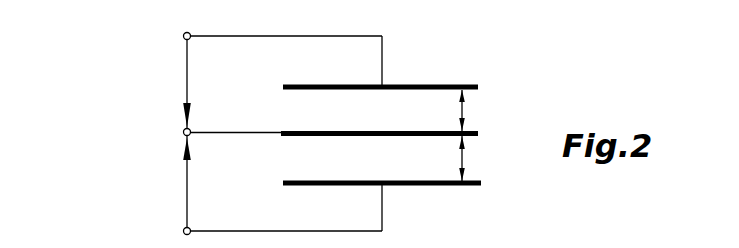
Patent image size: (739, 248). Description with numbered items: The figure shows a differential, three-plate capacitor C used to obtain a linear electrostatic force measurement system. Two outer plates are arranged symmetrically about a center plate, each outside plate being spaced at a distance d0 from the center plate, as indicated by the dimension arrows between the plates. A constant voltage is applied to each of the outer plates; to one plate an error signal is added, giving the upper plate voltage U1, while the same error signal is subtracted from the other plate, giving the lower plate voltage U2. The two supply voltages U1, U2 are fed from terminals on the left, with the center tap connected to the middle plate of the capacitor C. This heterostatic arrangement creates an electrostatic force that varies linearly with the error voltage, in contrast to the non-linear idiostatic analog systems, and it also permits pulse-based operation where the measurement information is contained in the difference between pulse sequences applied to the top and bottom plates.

The first outer plate voltage U1 is at (209, 81).
The second outer plate voltage U2 is at (208, 185).
The capacitor C is at (381, 135).
The plate distance d0 is at (482, 135).